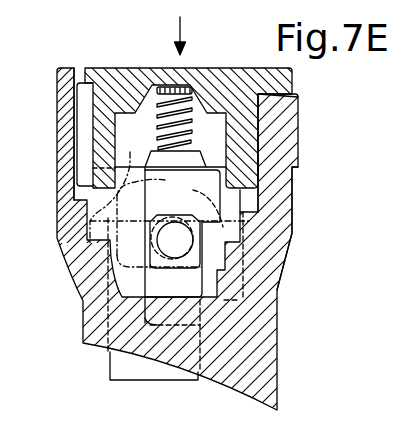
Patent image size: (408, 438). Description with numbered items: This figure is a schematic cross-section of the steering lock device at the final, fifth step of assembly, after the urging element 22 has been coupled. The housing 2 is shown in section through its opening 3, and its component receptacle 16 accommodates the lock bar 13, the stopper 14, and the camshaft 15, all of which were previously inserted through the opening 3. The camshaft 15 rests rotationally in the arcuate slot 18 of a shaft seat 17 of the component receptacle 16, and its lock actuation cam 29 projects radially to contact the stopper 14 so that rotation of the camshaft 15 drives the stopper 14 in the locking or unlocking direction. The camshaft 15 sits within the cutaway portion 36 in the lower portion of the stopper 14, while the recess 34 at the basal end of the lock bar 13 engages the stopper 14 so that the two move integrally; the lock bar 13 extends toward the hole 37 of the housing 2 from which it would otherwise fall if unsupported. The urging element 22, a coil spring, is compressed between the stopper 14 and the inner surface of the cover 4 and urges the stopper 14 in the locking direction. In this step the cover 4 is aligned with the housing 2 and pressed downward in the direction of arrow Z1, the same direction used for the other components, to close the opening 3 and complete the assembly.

The housing 2 is at (57, 110).
The opening 3 is at (77, 88).
The cover 4 is at (243, 68).
The lock bar 13 is at (110, 371).
The stopper 14 is at (216, 168).
The camshaft 15 is at (195, 213).
The component receptacle 16 is at (77, 143).
The shaft seat 17 is at (200, 197).
The arcuate slot 18 is at (196, 242).
The urging element 22 is at (195, 87).
The lock actuation cam 29 is at (148, 185).
The recess 34 is at (158, 220).
The cutaway portion 36 is at (201, 287).
The hole 37 is at (192, 371).
The arrow Z1 is at (178, 31).